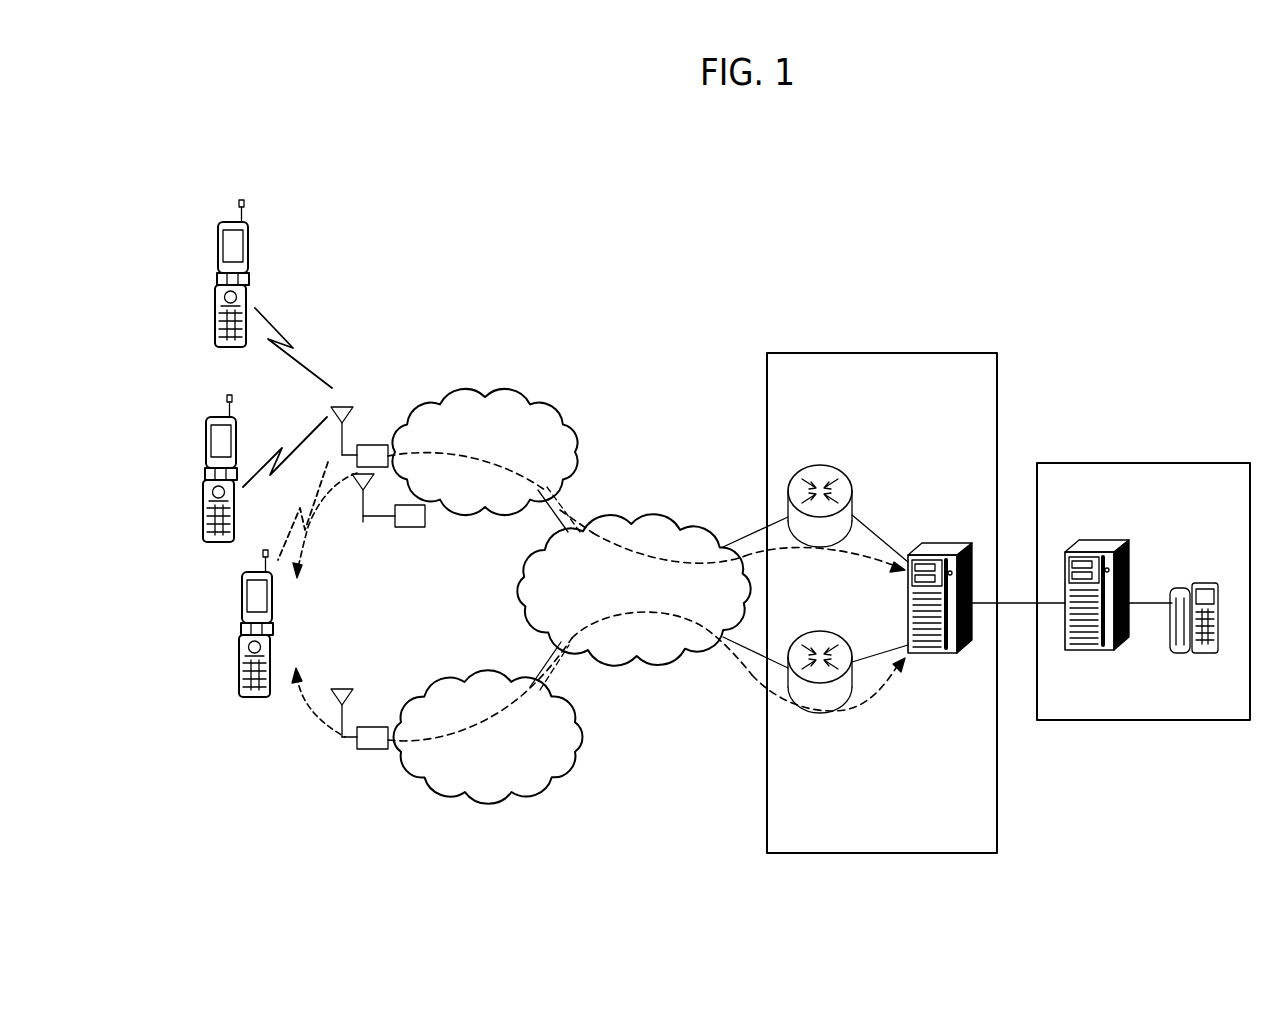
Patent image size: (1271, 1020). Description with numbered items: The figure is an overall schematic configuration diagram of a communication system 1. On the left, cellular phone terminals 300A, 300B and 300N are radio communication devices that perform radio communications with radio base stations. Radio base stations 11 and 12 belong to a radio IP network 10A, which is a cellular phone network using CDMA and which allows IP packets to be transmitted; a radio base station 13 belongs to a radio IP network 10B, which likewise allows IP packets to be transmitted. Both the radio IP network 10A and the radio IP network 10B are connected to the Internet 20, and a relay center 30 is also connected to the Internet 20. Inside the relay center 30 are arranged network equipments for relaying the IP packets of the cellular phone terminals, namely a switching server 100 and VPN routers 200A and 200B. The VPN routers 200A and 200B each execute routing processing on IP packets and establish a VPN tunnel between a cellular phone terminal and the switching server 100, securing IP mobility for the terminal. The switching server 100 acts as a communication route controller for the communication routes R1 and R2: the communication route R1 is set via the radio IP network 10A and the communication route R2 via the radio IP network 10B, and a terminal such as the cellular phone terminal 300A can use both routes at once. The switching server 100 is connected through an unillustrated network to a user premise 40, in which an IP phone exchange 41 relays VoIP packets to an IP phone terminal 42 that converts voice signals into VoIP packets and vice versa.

The communication system 1 is at (1138, 353).
The cellular phone terminal 300N is at (249, 253).
The cellular phone terminal 300B is at (203, 441).
The cellular phone terminal 300A is at (273, 599).
The radio base station 11 is at (368, 444).
The radio base station 12 is at (415, 528).
The radio base station 13 is at (370, 727).
The radio IP network 10A is at (473, 397).
The radio IP network 10B is at (470, 677).
The Internet 20 is at (645, 523).
The communication route R1 is at (567, 510).
The communication route R2 is at (566, 655).
The relay center 30 is at (910, 353).
The VPN router 200A is at (818, 465).
The VPN router 200B is at (820, 631).
The switching server 100 is at (937, 543).
The user premise 40 is at (1180, 463).
The IP phone exchange 41 is at (1102, 540).
The IP phone terminal 42 is at (1198, 584).